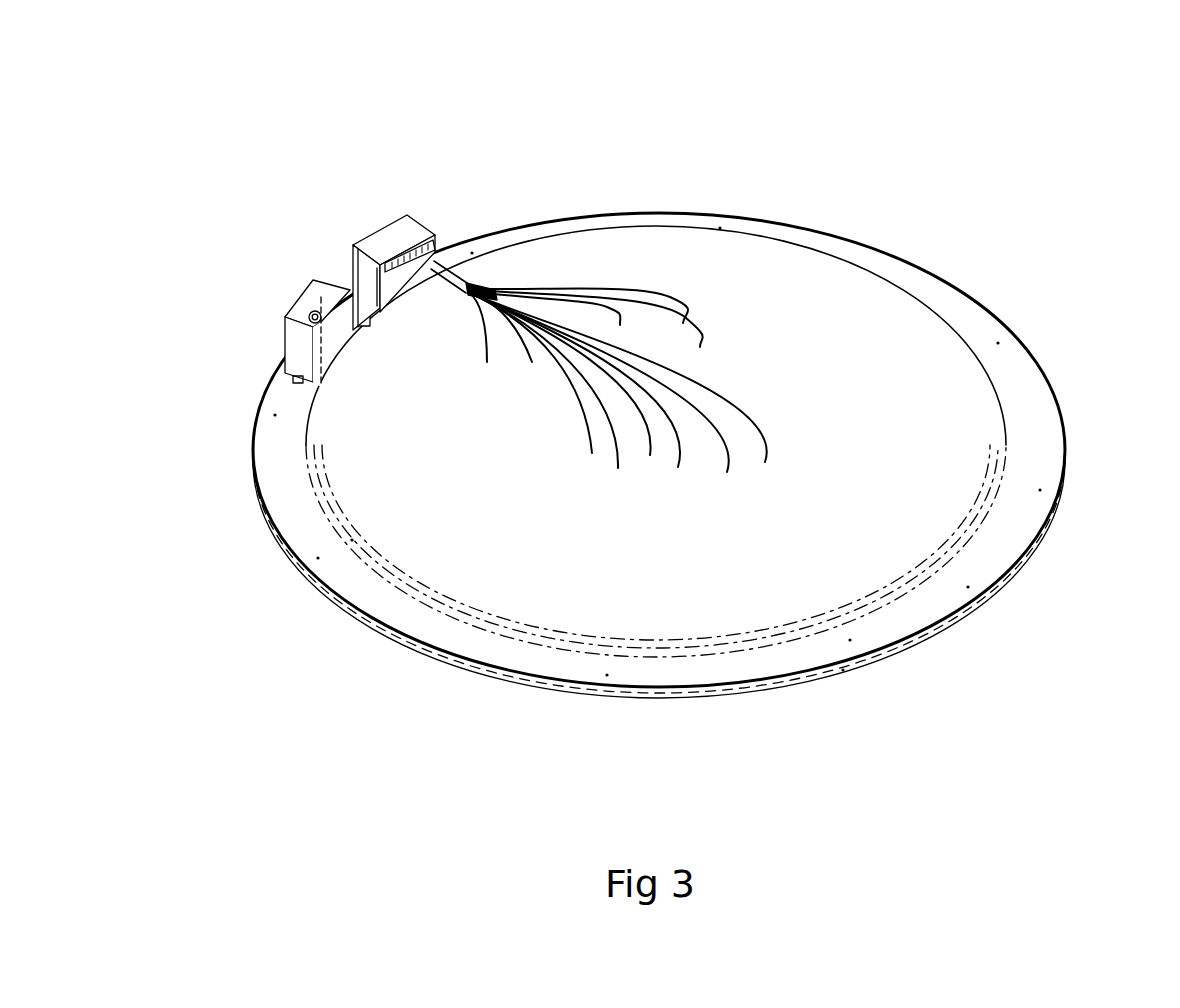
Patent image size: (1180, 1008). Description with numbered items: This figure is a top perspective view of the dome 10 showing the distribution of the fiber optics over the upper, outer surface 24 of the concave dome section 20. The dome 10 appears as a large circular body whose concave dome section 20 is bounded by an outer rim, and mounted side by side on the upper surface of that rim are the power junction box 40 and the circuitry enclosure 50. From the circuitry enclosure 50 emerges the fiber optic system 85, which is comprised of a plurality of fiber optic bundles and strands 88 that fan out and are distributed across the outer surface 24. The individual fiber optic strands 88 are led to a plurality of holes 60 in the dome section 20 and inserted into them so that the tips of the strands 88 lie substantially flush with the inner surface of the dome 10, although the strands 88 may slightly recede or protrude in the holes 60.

The dome 10 is at (1037, 353).
The concave dome section 20 is at (840, 310).
The outer surface 24 is at (372, 473).
The power junction box 40 is at (322, 293).
The circuitry enclosure 50 is at (387, 235).
The holes 60 is at (618, 468).
The fiber optic system 85 is at (483, 252).
The fiber optic strands 88 is at (733, 360).